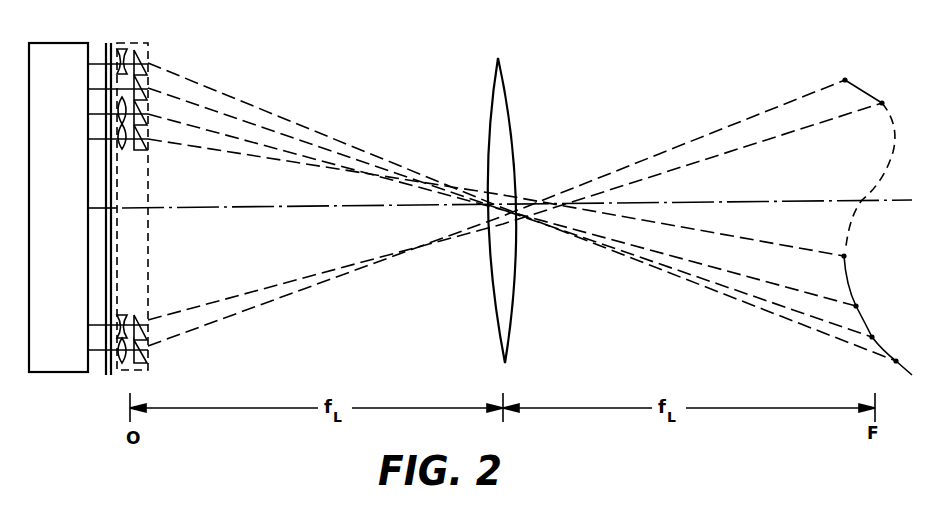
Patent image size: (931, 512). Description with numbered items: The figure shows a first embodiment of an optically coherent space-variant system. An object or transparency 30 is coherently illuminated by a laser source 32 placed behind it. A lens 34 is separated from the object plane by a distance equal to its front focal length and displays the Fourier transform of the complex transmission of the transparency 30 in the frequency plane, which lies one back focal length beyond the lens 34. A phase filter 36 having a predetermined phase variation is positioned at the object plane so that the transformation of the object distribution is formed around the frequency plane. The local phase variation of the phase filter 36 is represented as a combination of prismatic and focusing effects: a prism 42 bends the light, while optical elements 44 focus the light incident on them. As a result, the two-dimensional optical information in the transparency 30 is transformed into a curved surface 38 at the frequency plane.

The object or transparency 30 is at (108, 375).
The laser source 32 is at (60, 373).
The lens 34 is at (513, 133).
The phase filter 36 is at (148, 218).
The curved surface 38 is at (893, 116).
The prism 42 is at (142, 88).
The optical elements 44 is at (123, 50).